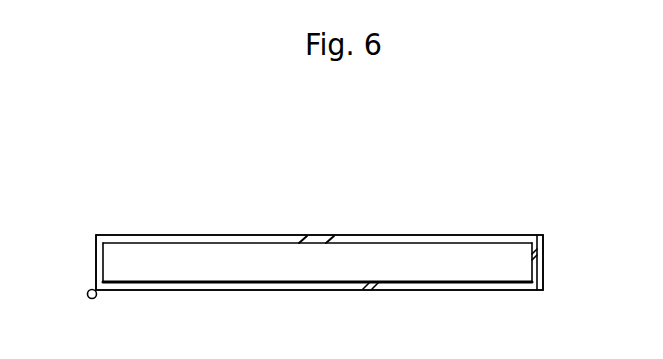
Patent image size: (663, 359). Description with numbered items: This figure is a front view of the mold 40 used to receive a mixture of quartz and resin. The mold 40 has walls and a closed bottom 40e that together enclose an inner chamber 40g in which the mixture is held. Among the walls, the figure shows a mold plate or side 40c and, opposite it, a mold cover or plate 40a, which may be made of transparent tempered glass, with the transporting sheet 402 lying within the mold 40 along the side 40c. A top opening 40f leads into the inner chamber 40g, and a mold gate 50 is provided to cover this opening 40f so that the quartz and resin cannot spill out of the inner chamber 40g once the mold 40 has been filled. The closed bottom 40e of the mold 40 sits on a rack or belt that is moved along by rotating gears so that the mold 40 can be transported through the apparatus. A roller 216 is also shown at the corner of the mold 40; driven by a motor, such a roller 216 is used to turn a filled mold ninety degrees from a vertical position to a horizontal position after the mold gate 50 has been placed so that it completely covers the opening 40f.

The mold 40 is at (558, 223).
The mold cover or plate 40a is at (218, 240).
The mold plate or side 40c is at (318, 290).
The closed bottom 40e is at (97, 265).
The top opening 40f is at (530, 263).
The inner chamber 40g is at (425, 258).
The transporting sheet 402 is at (223, 281).
The mold gate 50 is at (537, 274).
The roller 216 is at (90, 299).